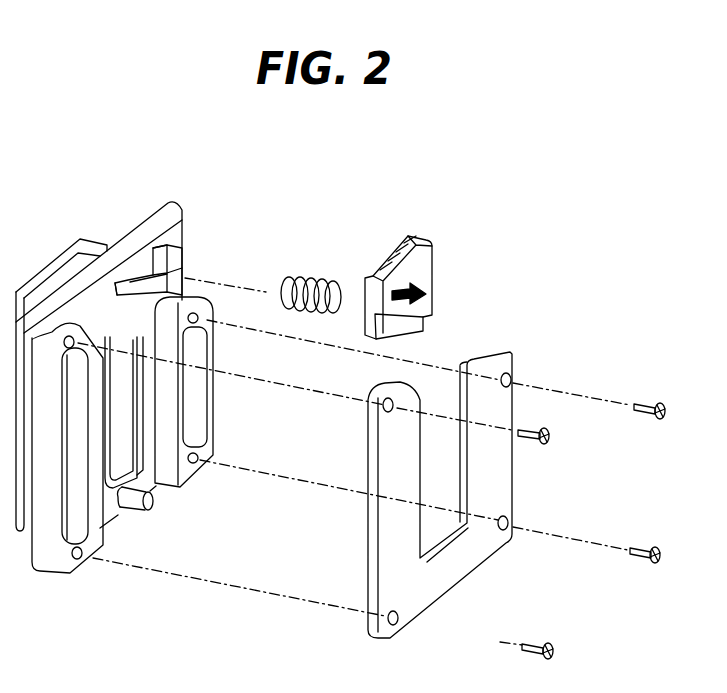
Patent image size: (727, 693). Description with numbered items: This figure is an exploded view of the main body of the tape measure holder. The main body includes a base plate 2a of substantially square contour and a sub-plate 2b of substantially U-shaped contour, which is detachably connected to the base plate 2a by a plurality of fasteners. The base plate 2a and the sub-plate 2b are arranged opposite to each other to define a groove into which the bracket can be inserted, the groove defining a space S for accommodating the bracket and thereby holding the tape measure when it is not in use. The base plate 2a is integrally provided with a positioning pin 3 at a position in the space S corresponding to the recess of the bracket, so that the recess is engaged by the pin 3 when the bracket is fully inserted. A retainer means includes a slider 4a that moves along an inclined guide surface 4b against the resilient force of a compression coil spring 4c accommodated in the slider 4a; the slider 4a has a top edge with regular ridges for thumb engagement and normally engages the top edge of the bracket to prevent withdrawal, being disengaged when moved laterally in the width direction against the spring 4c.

The base plate 2a is at (130, 228).
The sub-plate 2b is at (390, 528).
The positioning pin 3 is at (152, 500).
The slider 4a is at (397, 240).
The guide surface 4b is at (185, 300).
The compression coil spring 4c is at (302, 278).
The space S is at (132, 402).